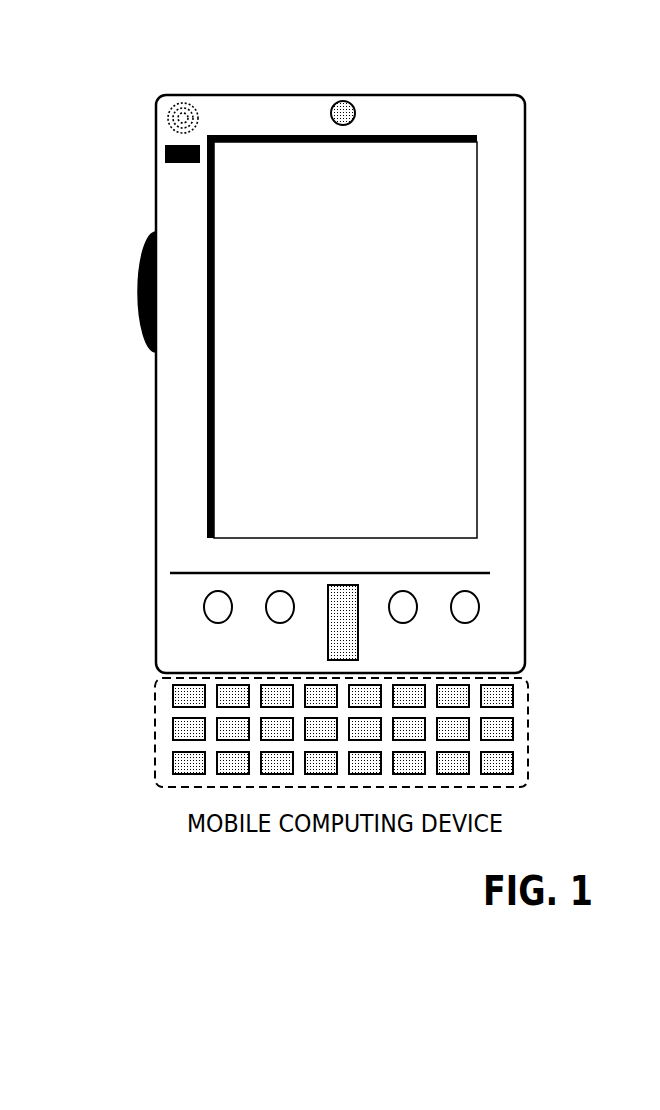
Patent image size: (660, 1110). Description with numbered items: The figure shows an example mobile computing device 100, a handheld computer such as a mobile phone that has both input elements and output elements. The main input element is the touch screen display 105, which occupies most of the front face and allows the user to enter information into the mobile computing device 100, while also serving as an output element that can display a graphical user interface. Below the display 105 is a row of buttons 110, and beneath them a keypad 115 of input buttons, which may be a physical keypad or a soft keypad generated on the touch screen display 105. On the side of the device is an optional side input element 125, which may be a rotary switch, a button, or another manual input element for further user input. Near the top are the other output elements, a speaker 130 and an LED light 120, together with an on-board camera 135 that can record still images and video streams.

The mobile computing device 100 is at (526, 110).
The touch screen display 105 is at (232, 482).
The buttons 110 is at (463, 617).
The input buttons 115 is at (153, 757).
The LED light 120 is at (165, 145).
The side input element 125 is at (137, 298).
The speaker 130 is at (183, 112).
The on-board camera 135 is at (355, 106).